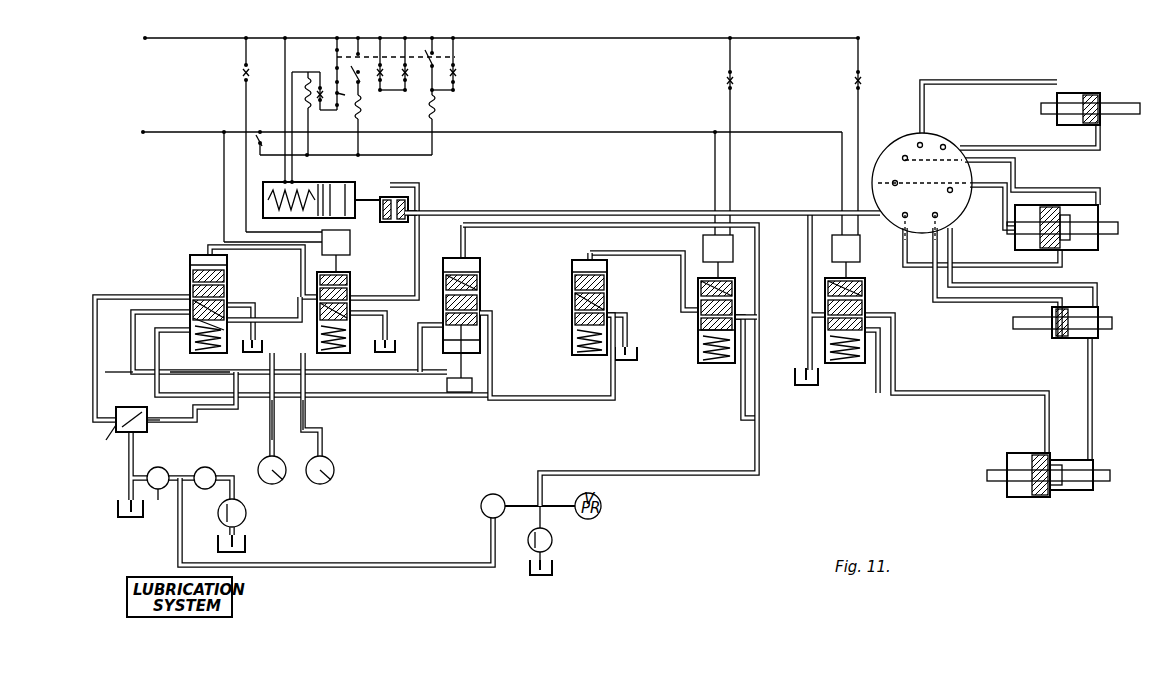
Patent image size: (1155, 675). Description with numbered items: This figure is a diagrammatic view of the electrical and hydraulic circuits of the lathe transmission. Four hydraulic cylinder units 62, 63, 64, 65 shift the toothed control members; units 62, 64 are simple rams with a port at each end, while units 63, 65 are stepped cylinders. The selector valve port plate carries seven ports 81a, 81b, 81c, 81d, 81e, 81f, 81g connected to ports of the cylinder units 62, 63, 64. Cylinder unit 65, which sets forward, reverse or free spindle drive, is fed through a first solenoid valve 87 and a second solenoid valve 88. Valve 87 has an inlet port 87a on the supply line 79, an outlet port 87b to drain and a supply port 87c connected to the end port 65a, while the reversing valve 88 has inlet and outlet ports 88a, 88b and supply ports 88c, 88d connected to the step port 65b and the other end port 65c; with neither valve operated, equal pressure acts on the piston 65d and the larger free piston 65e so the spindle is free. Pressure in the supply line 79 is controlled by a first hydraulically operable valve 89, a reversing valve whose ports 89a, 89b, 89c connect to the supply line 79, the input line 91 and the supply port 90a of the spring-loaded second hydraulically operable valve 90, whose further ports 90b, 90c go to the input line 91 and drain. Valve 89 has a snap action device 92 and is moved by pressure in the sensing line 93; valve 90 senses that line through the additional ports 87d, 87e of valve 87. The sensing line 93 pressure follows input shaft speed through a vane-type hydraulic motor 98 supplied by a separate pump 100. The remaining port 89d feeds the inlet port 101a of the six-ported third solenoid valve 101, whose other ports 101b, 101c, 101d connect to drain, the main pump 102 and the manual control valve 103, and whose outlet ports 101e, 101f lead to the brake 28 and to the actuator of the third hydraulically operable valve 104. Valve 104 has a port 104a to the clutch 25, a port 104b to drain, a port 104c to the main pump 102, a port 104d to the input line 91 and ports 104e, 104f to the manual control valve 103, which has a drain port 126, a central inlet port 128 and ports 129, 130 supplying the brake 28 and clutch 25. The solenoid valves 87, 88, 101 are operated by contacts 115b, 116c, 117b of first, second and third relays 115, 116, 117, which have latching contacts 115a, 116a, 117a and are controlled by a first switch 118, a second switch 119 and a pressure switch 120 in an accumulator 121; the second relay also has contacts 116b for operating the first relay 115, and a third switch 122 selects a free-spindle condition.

The clutch 25 is at (278, 479).
The brake 28 is at (329, 479).
The hydraulic cylinder unit 62 is at (1080, 95).
The hydraulic cylinder unit 63 is at (1065, 215).
The hydraulic cylinder unit 64 is at (1078, 300).
The hydraulic cylinder unit 65 is at (1037, 462).
The end port 65a is at (1008, 456).
The step port 65b is at (1056, 465).
The other end port 65c is at (1090, 462).
The piston 65d is at (1058, 484).
The larger free piston 65e is at (1035, 494).
The supply line 79 is at (756, 196).
The port 81a is at (952, 193).
The port 81b is at (938, 218).
The port 81c is at (903, 218).
The port 81d is at (892, 182).
The port 81e is at (903, 154).
The port 81f is at (922, 142).
The port 81g is at (947, 145).
The first solenoid valve 87 is at (717, 310).
The inlet port 87a is at (700, 332).
The outlet port 87b is at (704, 345).
The supply port 87c is at (733, 322).
The additional port 87d is at (734, 290).
The additional port 87e is at (700, 308).
The second solenoid valve 88 is at (851, 299).
The inlet port 88a is at (828, 308).
The outlet port 88b is at (828, 332).
The supply port 88c is at (863, 326).
The supply port 88d is at (865, 290).
The first hydraulically operable valve 89 is at (477, 292).
The port 89a is at (446, 282).
The port 89b is at (477, 300).
The port 89c is at (478, 316).
The port 89d is at (443, 330).
The second hydraulically operable valve 90 is at (594, 292).
The supply port 90a is at (575, 318).
The port 90b is at (606, 314).
The drain port 90c is at (605, 300).
The input line 91 is at (545, 399).
The snap action device 92 is at (458, 392).
The sensing line 93 is at (495, 212).
The hydraulic motor 98 is at (486, 496).
The pump 100 is at (552, 542).
The third solenoid valve 101 is at (374, 311).
The inlet port 101a is at (347, 294).
The port 101b is at (350, 252).
The port 101c is at (347, 278).
The port 101d is at (348, 320).
The outlet port 101e is at (303, 426).
The outlet port 101f is at (270, 422).
The main pump 102 is at (246, 515).
The manual control valve 103 is at (144, 415).
The third hydraulically operable valve 104 is at (190, 288).
The port 104a is at (224, 304).
The port 104b is at (226, 314).
The port 104c is at (200, 381).
The port 104d is at (193, 291).
The port 104e is at (193, 275).
The port 104f is at (193, 322).
The first relay 115 is at (360, 112).
The latching contacts 115a is at (382, 62).
The contacts 115b is at (733, 80).
The second relay 116 is at (435, 107).
The latching contacts 116a is at (457, 73).
The additional contacts 116b is at (433, 60).
The contacts 116c is at (862, 78).
The third relay 117 is at (305, 100).
The latching contacts 117a is at (316, 94).
The contacts 117b is at (243, 70).
The first switch 118 is at (335, 72).
The second switch 119 is at (357, 62).
The pressure switch 120 is at (282, 192).
The accumulator 121 is at (340, 190).
The third switch 122 is at (345, 95).
The drain port 126 is at (135, 437).
The inlet port 128 is at (126, 406).
The port 129 is at (150, 422).
The port 130 is at (101, 440).